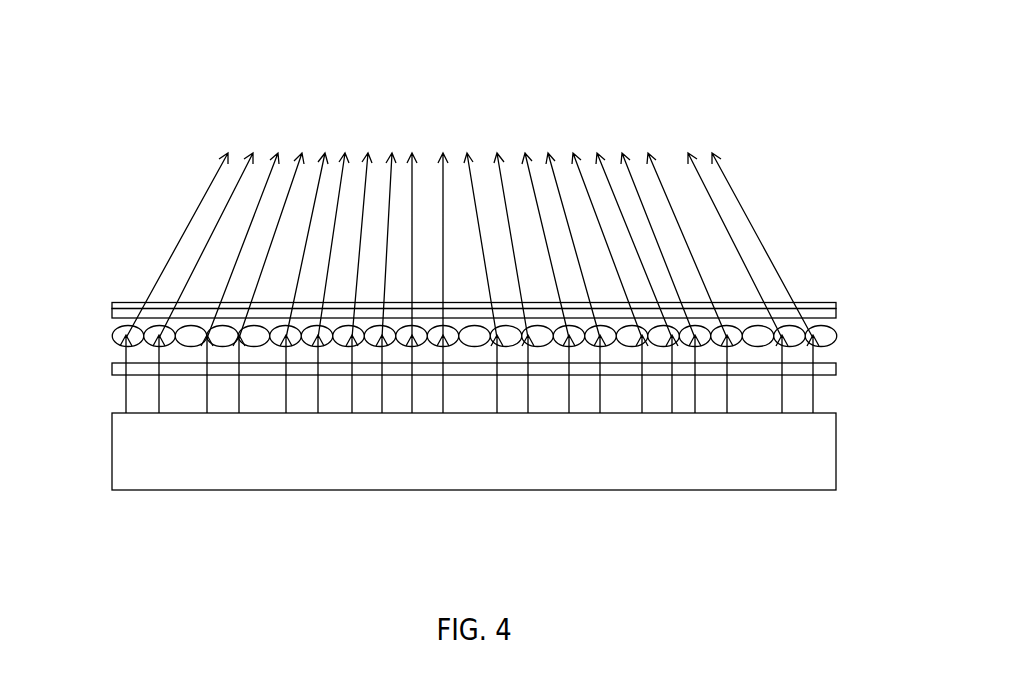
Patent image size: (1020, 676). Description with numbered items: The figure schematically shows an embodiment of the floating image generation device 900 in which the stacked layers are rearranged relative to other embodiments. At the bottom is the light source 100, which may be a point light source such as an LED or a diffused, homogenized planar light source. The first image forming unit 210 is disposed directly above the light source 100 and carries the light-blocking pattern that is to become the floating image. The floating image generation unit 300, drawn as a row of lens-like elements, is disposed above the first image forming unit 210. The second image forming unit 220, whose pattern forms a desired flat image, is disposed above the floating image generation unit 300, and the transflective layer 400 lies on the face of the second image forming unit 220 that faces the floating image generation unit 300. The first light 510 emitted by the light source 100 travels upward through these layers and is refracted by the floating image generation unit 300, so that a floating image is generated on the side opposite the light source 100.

The floating image generation device 900 is at (165, 84).
The second image forming unit 220 is at (836, 307).
The transflective layer 400 is at (834, 314).
The floating image generation unit 300 is at (836, 345).
The first image forming unit 210 is at (834, 368).
The first light 510 is at (127, 396).
The light source 100 is at (503, 470).